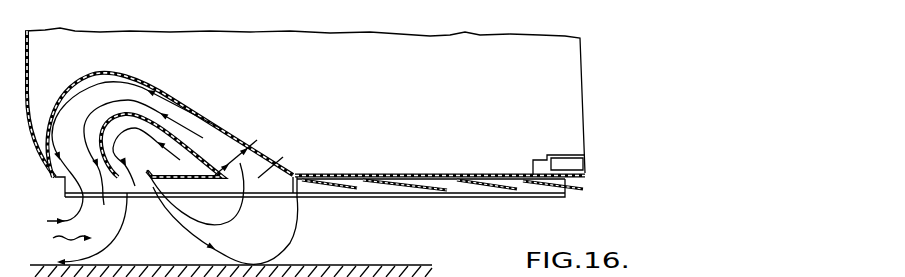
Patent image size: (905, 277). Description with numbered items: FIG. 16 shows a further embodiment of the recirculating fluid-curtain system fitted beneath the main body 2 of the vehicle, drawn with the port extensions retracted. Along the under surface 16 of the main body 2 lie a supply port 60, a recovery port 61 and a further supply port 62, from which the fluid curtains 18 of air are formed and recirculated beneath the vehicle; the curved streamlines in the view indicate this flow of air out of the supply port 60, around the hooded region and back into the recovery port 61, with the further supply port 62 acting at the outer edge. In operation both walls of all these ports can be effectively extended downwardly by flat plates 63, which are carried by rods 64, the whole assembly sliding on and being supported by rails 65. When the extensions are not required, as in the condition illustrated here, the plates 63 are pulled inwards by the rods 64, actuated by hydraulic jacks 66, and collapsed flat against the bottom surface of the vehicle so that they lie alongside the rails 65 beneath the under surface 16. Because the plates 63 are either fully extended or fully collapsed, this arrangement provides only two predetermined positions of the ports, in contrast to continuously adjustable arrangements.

The main body 2 is at (500, 57).
The under surface 16 is at (445, 173).
The fluid curtain 18 is at (229, 253).
The supply port 60 is at (137, 190).
The recovery port 61 is at (263, 175).
The further supply port 62 is at (100, 197).
The flat plates 63 is at (373, 187).
The rods 64 is at (510, 180).
The rails 65 is at (420, 197).
The hydraulic jacks 66 is at (555, 157).